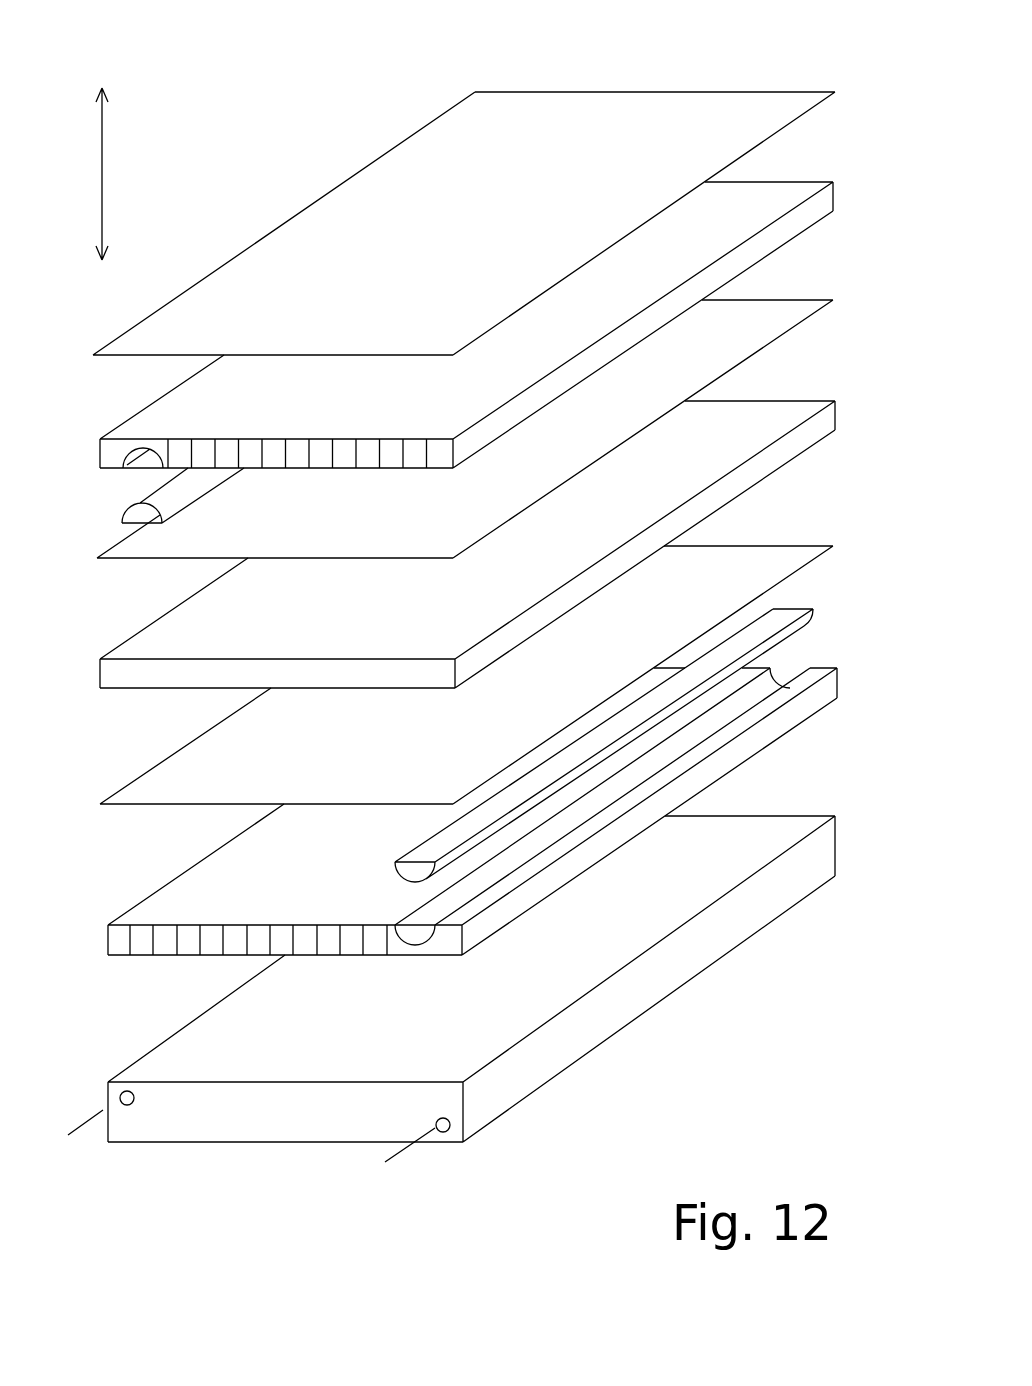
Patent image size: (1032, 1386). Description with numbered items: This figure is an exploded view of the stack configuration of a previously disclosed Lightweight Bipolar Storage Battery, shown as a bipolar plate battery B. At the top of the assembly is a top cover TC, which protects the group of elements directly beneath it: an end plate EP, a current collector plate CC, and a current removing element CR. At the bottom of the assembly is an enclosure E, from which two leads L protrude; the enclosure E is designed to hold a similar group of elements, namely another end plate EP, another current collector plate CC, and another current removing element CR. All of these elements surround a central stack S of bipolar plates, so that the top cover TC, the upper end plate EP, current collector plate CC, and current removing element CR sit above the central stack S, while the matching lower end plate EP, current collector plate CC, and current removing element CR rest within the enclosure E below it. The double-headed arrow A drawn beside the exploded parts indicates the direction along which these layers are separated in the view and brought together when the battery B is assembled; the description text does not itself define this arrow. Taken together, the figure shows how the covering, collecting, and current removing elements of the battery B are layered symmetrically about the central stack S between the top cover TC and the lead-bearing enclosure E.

The top cover TC is at (616, 105).
The end plate EP is at (798, 181).
The current collector plate CC is at (806, 300).
The central stack of bipolar plates S is at (130, 638).
The current removing element CR is at (125, 513).
The enclosure E is at (693, 982).
The lead L is at (105, 1107).
The bipolar plate battery B is at (374, 128).
The stacking direction A is at (86, 174).